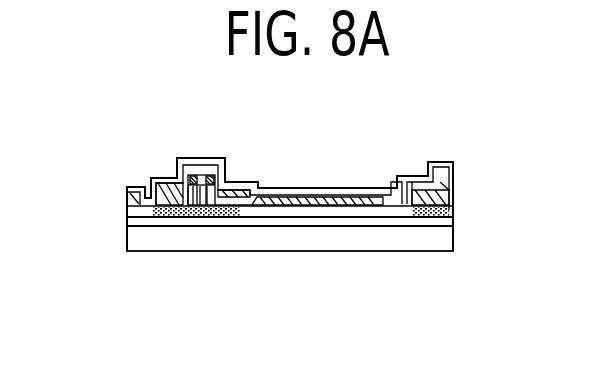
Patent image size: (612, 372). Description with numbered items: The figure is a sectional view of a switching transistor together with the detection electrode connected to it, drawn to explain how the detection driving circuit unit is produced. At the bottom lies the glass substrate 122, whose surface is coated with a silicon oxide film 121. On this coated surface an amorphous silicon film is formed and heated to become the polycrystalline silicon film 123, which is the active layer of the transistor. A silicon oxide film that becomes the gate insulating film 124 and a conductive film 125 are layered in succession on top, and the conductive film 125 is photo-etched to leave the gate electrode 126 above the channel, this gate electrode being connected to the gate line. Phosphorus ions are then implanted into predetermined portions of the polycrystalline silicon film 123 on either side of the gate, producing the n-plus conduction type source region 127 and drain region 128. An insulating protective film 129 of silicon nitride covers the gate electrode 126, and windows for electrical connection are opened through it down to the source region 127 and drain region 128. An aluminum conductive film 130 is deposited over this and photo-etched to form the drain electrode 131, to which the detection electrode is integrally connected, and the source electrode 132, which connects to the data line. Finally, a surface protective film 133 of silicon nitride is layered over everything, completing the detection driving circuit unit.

The silicon oxide film 121 is at (451, 224).
The glass substrate 122 is at (433, 244).
The polycrystalline silicon film 123 is at (187, 204).
The gate insulating film 124 is at (191, 205).
The conductive film 125 is at (205, 205).
The gate electrode 126 is at (197, 205).
The source region 127 is at (166, 211).
The drain region 128 is at (228, 210).
The insulating protective film 129 is at (127, 210).
The conductive film 130 is at (342, 203).
The drain electrode 131 is at (252, 198).
The source electrode 132 is at (170, 189).
The surface protective film 133 is at (196, 158).